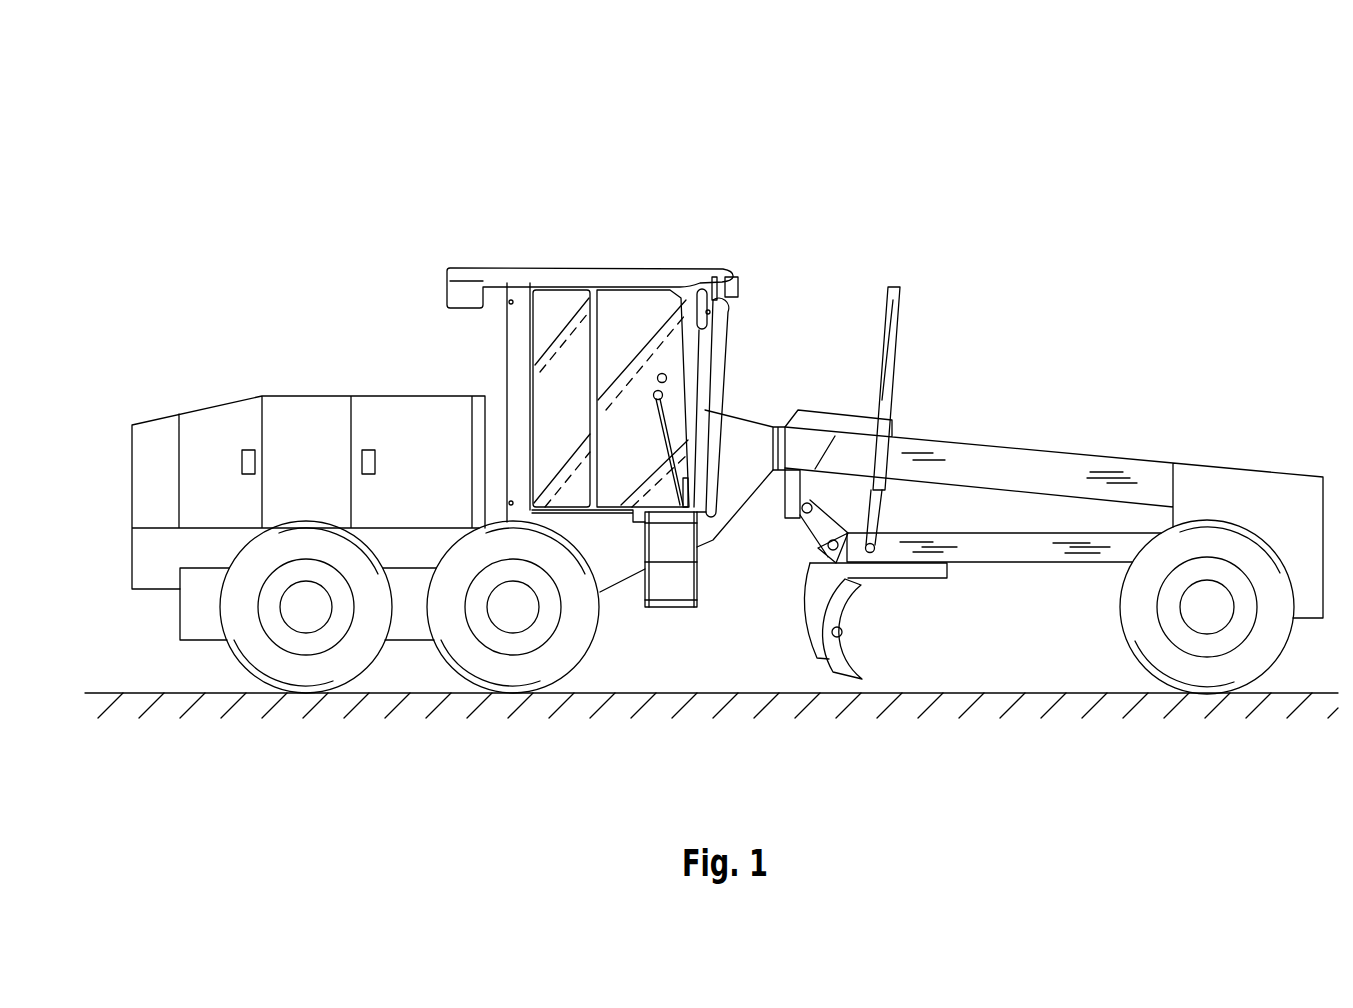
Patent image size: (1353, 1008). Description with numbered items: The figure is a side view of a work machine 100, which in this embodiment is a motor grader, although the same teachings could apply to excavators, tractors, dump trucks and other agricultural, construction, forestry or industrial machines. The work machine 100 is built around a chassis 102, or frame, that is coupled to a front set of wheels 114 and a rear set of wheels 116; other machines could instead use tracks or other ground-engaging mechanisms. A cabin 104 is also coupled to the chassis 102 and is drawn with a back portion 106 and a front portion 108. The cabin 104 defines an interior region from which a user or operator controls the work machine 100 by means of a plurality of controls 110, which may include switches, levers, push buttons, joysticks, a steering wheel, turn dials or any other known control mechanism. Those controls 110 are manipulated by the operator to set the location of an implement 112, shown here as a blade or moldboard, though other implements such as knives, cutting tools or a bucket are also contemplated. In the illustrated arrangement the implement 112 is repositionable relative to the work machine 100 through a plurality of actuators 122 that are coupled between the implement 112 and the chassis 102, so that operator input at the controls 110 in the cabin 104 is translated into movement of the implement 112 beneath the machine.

The work machine 100 is at (460, 178).
The chassis 102 is at (610, 562).
The cabin 104 is at (657, 273).
The back portion 106 is at (493, 359).
The front portion 108 is at (735, 347).
The plurality of controls 110 is at (667, 377).
The implement 112 is at (867, 647).
The front set of wheels 114 is at (1138, 617).
The rear set of wheels 116 is at (251, 651).
The plurality of actuators 122 is at (901, 352).